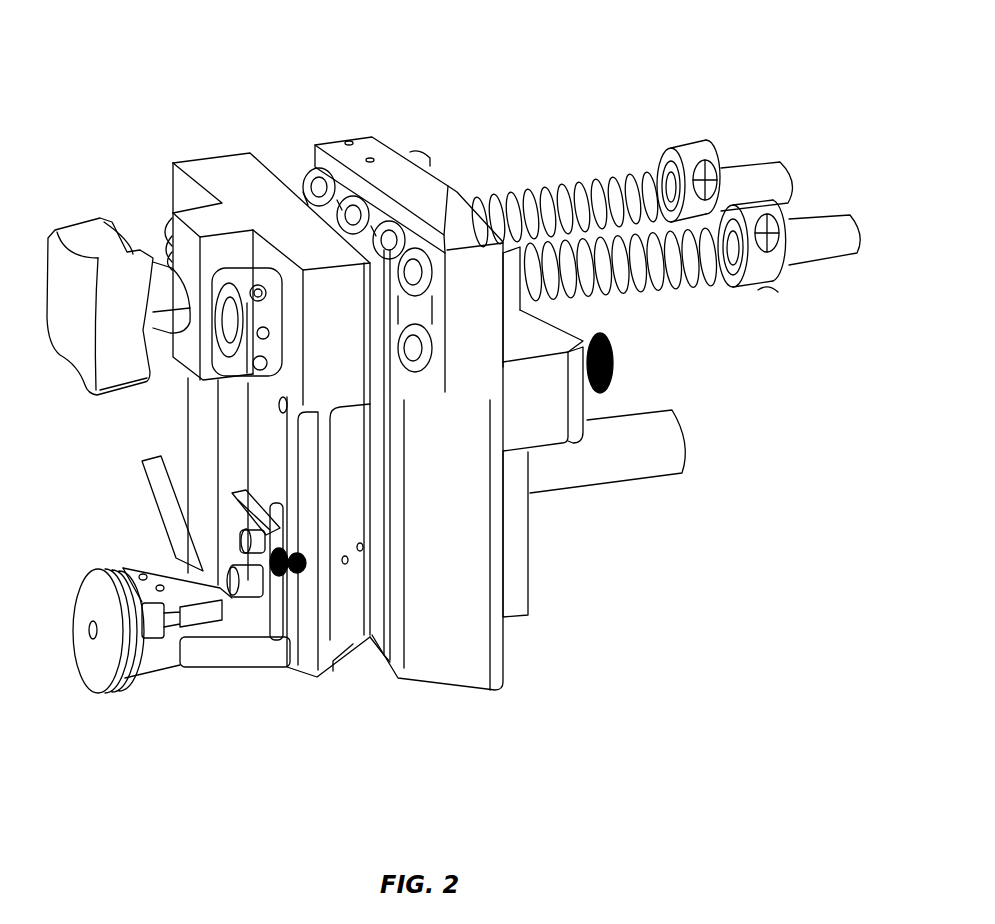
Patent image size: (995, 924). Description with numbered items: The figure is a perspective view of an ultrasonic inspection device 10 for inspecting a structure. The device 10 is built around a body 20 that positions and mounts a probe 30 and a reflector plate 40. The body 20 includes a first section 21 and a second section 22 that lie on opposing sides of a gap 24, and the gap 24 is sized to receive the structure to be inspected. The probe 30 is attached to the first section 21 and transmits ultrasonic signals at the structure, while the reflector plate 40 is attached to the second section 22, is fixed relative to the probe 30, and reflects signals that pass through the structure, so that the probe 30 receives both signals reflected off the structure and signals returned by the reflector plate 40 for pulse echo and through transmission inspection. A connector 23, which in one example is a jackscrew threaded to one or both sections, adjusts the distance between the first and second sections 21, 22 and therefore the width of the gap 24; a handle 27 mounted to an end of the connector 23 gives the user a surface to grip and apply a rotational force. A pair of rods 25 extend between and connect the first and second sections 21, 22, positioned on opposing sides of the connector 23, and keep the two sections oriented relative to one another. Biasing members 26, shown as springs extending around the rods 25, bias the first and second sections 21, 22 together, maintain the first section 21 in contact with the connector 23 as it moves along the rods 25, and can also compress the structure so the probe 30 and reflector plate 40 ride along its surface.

The ultrasonic inspection device 10 is at (128, 106).
The body 20 is at (354, 113).
The first section 21 is at (490, 650).
The second section 22 is at (343, 657).
The connector 23 is at (396, 258).
The gap 24 is at (377, 692).
The rods 25 is at (827, 237).
The biasing members 26 is at (630, 183).
The handle 27 is at (96, 245).
The probe 30 is at (512, 545).
The reflector plate 40 is at (260, 443).